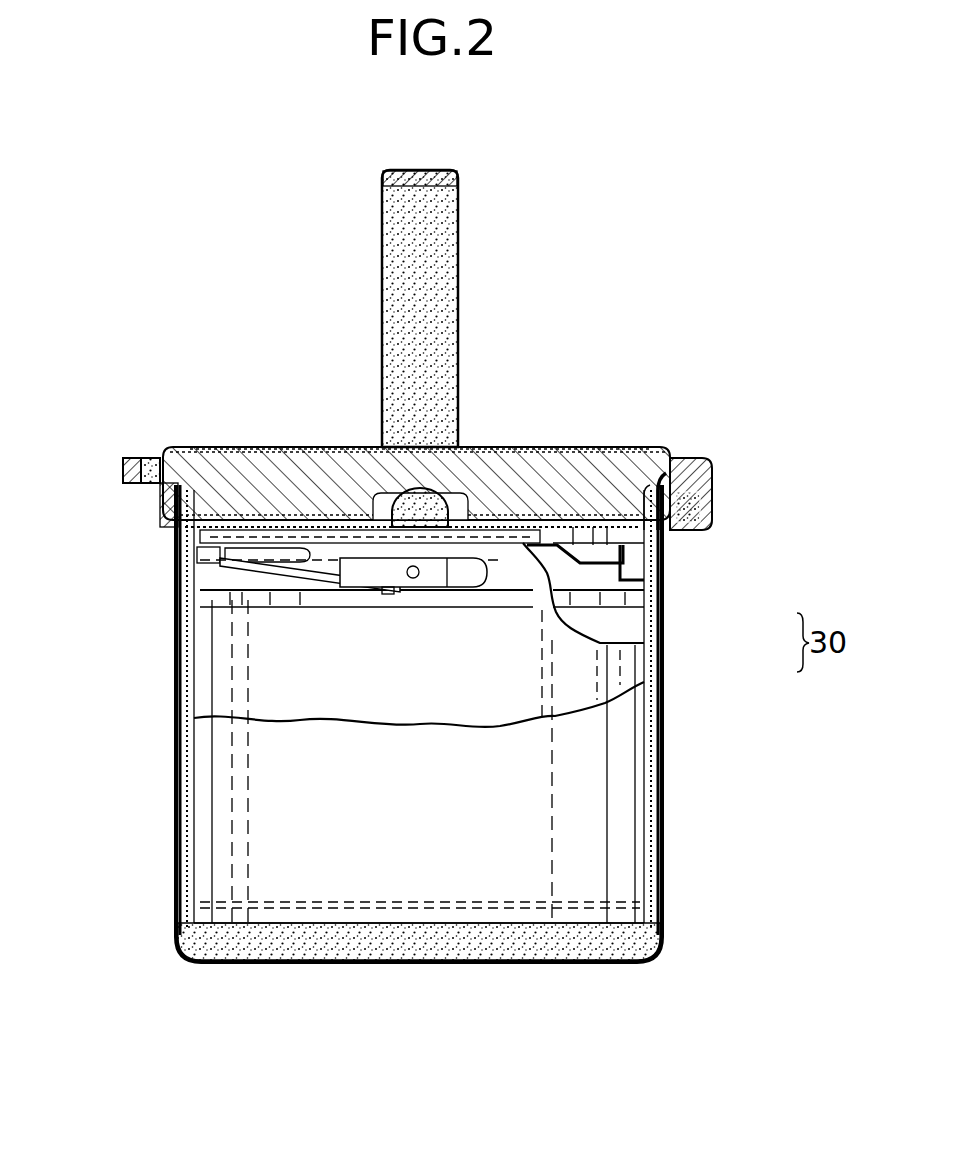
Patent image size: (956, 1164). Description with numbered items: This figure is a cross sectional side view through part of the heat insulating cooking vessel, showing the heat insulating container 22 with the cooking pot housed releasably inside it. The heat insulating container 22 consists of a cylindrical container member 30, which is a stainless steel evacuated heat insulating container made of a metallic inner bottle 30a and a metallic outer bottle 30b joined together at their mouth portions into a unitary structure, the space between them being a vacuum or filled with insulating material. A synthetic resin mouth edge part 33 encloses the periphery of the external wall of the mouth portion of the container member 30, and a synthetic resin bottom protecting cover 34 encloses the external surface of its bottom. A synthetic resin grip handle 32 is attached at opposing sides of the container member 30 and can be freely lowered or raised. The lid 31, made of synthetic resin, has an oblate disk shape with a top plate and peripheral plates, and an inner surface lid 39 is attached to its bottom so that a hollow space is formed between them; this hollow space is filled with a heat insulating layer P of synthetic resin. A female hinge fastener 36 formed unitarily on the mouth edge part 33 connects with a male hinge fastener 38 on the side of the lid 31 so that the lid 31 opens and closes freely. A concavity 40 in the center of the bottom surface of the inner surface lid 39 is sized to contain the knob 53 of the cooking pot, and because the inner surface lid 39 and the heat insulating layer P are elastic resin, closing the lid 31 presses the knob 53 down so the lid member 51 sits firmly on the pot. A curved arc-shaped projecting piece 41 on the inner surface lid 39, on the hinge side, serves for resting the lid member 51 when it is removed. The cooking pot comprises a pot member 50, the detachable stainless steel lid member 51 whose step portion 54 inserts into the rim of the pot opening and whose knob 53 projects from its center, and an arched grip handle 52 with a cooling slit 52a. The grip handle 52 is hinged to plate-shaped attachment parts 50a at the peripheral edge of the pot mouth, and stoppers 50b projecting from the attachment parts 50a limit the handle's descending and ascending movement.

The heat insulating container 22 is at (678, 800).
The container member 30 is at (617, 863).
The metallic inner bottle 30a is at (662, 603).
The metallic outer bottle 30b is at (662, 657).
The lid 31 is at (540, 445).
The grip handle 32 is at (430, 247).
The mouth edge part 33 is at (162, 510).
The bottom protecting cover 34 is at (477, 943).
The female hinge fastener 36 is at (717, 493).
The male hinge fastener 38 is at (697, 463).
The inner surface lid 39 is at (640, 535).
The concavity 40 is at (440, 515).
The projecting piece 41 is at (627, 540).
The pot member 50 is at (573, 670).
The attachment part 50a is at (467, 577).
The stopper 50b is at (389, 596).
The lid member 51 is at (380, 527).
The grip handle 52 is at (277, 563).
The slit 52a is at (200, 546).
The knob 53 is at (415, 500).
The step portion 54 is at (590, 540).
The heat insulating layer P is at (251, 458).